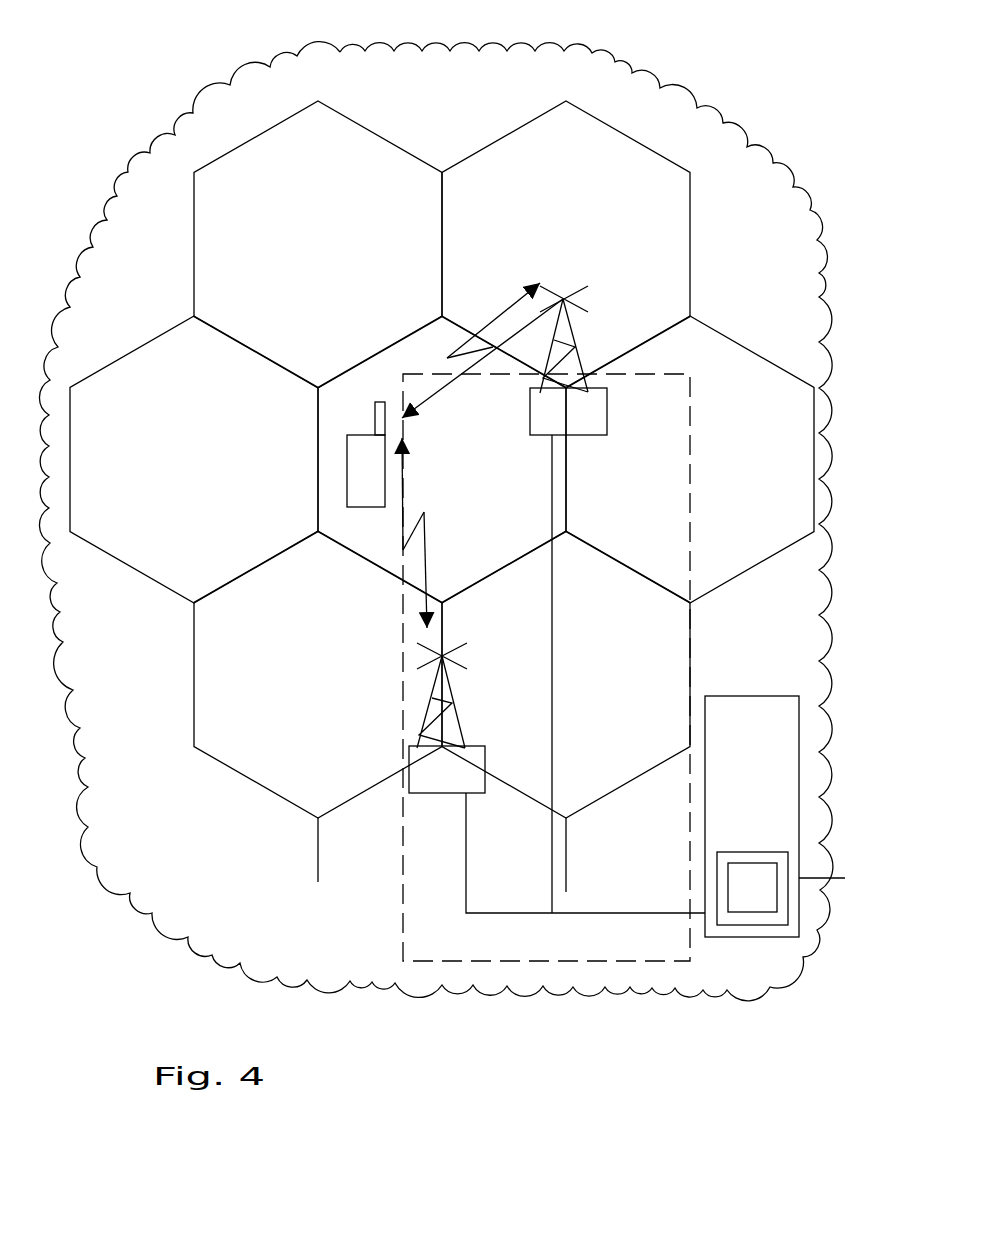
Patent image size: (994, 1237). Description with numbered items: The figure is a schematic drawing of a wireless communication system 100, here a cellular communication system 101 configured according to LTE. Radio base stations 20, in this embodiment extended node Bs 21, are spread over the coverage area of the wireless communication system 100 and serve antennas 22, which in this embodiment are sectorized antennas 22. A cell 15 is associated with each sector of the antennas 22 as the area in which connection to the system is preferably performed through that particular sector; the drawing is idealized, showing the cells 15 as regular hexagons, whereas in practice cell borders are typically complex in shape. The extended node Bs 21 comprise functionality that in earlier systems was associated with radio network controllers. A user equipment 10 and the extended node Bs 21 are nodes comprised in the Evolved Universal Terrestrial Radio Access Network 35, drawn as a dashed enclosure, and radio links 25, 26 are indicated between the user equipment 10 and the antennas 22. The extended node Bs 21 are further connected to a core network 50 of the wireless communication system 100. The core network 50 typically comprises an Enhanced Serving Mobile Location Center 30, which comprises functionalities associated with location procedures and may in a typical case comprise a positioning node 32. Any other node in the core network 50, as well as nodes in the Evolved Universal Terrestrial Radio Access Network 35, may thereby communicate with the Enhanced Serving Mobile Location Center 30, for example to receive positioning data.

The wireless communication system 100 is at (435, 501).
The cellular communication system 101 is at (733, 133).
The cell 15 is at (330, 200).
The user equipment 10 is at (348, 472).
The radio base station 20 is at (609, 432).
The extended node B 21 is at (575, 418).
The sectorized antenna 22 is at (563, 299).
The radio link 25 is at (497, 312).
The handover radio link 26 is at (424, 512).
The Enhanced Serving Mobile Location Center 30 is at (737, 925).
The positioning node 32 is at (763, 863).
The Evolved Universal Terrestrial Radio Access Network 35 is at (403, 947).
The Core Network 50 is at (737, 707).